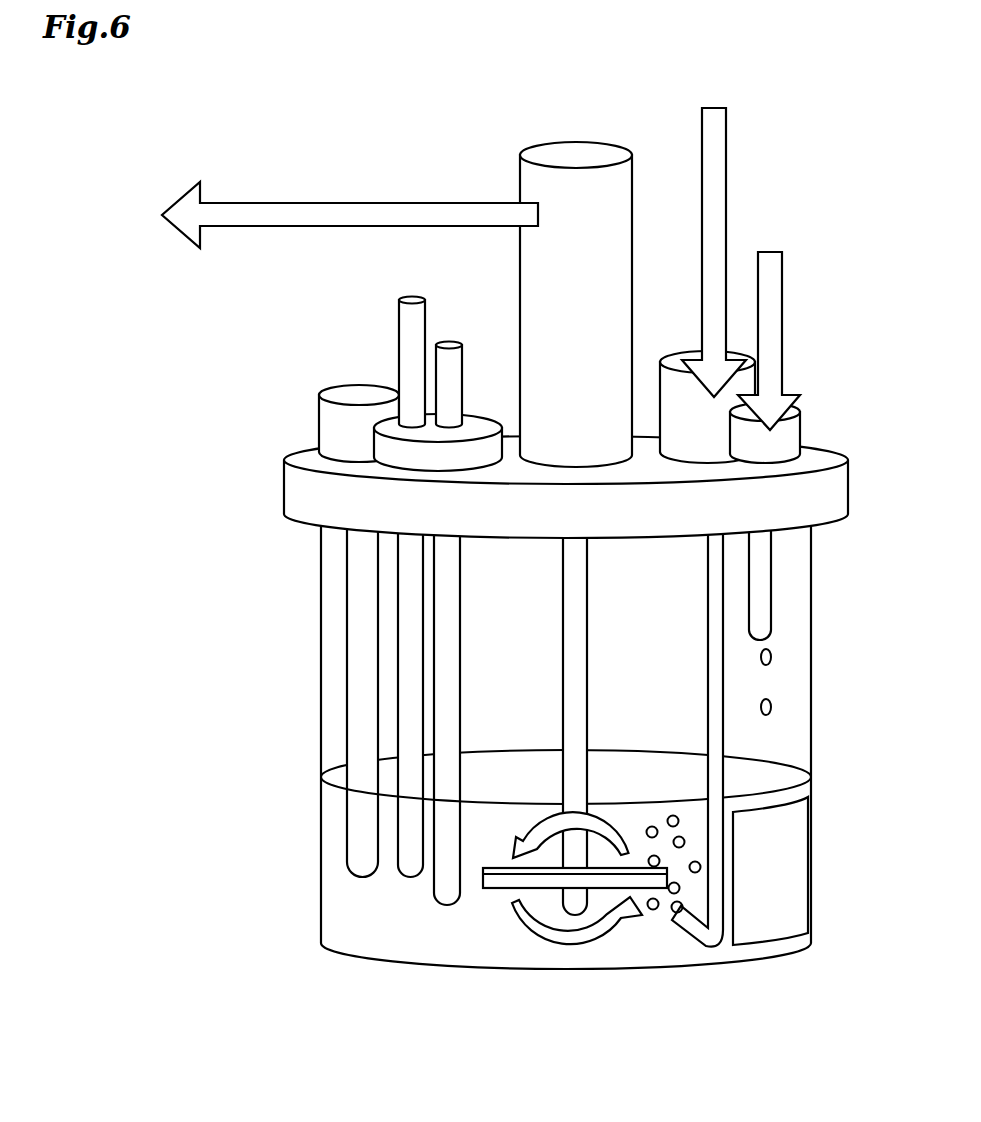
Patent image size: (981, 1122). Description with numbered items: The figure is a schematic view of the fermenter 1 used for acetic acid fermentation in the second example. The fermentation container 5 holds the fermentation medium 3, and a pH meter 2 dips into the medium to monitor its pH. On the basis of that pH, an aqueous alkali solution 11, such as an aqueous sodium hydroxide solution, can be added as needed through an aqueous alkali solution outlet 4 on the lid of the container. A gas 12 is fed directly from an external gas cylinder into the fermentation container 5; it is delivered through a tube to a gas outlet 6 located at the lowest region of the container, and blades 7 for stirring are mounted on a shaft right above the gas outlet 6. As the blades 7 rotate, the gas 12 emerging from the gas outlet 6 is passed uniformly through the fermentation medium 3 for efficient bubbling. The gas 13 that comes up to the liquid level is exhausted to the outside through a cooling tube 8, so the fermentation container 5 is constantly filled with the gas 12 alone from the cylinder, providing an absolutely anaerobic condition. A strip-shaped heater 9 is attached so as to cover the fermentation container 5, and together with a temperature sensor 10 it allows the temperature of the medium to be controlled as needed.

The fermenter 1 is at (841, 114).
The pH meter 2 is at (352, 708).
The fermentation medium 3 is at (352, 898).
The aqueous alkali solution outlet 4 is at (765, 600).
The fermentation container 5 is at (811, 685).
The gas outlet 6 is at (690, 928).
The blades for stirring 7 is at (497, 880).
The cooling tube 8 is at (520, 265).
The strip-shaped heater 9 is at (792, 868).
The temperature sensor 10 is at (448, 898).
The aqueous alkali solution 11 is at (782, 300).
The gas 12 is at (726, 183).
The gas coming up to the liquid level 13 is at (358, 203).